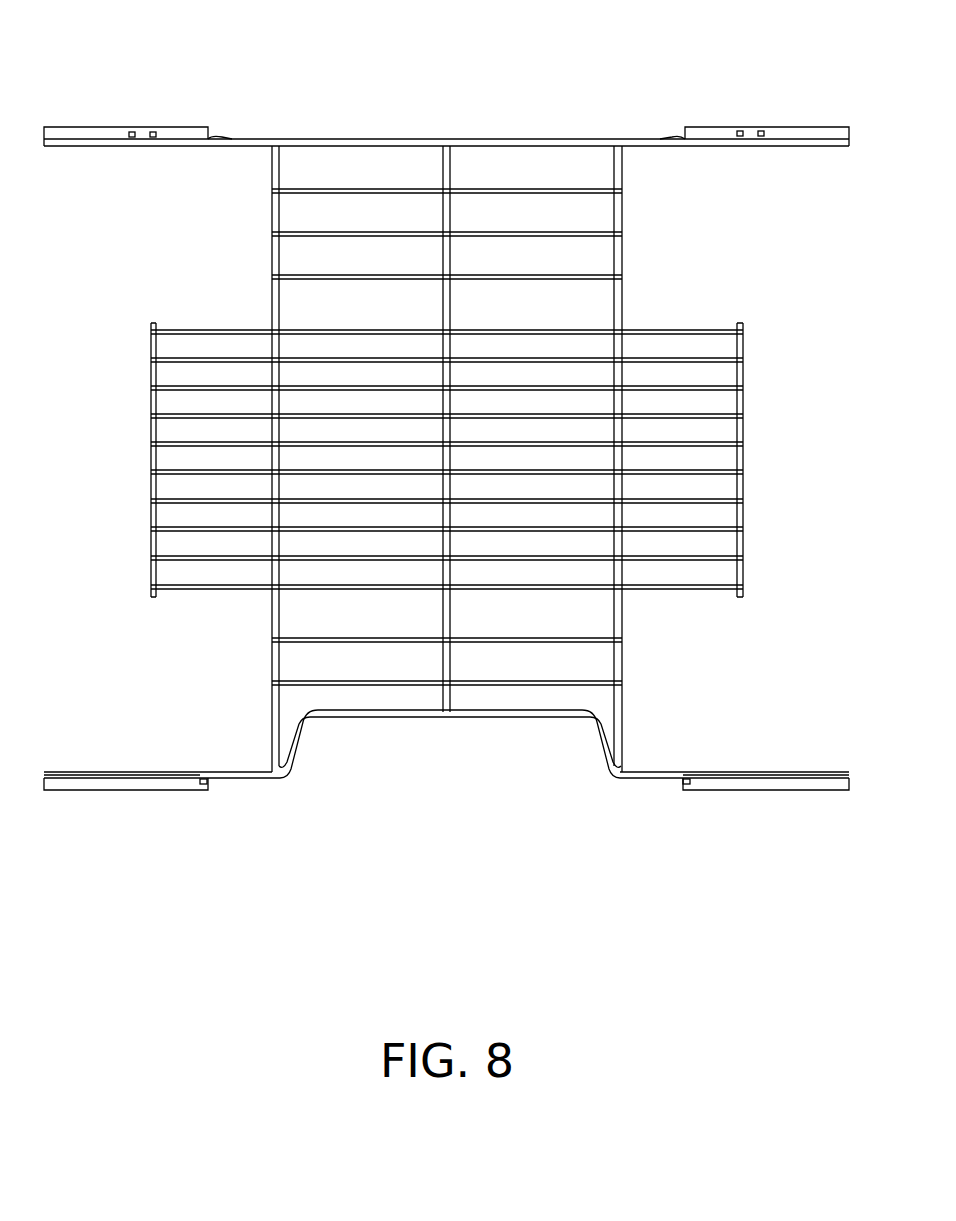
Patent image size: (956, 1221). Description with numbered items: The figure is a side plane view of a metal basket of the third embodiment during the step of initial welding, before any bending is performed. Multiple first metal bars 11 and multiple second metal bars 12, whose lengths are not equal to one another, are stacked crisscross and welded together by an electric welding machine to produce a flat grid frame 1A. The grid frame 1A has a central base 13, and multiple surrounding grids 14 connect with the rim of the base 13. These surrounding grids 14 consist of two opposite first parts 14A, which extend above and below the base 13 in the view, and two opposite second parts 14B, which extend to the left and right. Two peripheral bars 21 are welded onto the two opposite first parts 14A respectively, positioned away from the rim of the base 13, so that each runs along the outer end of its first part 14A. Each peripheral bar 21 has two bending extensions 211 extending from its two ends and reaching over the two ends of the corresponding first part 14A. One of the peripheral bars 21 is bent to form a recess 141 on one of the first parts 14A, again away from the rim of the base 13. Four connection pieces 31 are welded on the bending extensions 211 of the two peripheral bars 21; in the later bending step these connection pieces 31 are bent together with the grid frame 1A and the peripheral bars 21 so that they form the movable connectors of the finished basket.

The grid frame 1A is at (150, 545).
The first metal bar 11 is at (445, 607).
The second metal bar 12 is at (673, 533).
The base 13 is at (513, 468).
The surrounding grid 14 is at (453, 365).
The first part 14A is at (508, 188).
The second part 14B is at (153, 430).
The recess 141 is at (467, 742).
The peripheral bar 21 is at (352, 138).
The bending extension 211 is at (73, 143).
The connection piece 31 is at (104, 132).